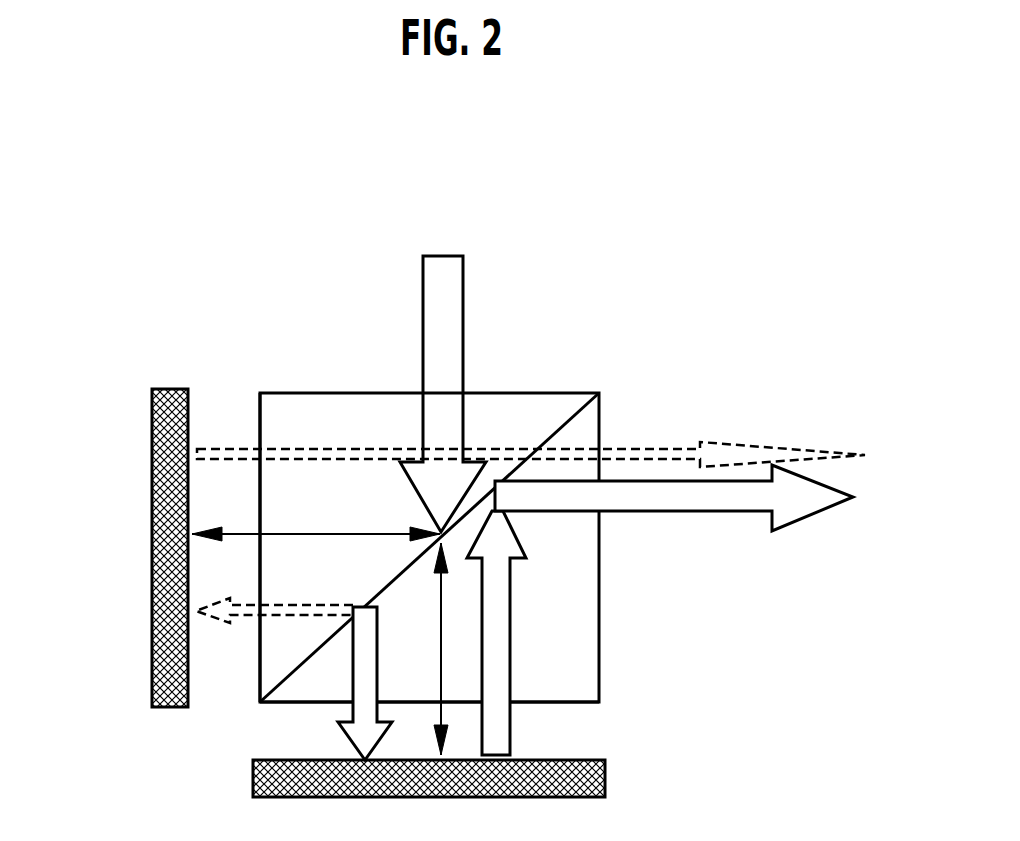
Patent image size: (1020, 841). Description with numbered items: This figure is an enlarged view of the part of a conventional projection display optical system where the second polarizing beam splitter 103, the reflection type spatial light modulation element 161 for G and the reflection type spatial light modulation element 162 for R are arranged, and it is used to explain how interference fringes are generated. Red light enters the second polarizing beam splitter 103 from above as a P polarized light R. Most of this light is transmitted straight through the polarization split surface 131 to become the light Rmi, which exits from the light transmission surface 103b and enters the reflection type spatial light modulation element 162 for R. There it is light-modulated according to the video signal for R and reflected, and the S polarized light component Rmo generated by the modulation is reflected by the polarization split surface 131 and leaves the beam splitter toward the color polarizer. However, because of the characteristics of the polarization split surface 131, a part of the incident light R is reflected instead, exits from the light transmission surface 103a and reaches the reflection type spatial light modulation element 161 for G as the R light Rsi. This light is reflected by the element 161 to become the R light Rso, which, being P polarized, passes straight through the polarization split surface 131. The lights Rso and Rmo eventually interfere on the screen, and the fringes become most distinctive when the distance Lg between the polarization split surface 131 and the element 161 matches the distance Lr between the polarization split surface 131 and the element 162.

The second polarizing beam splitter 103 is at (575, 687).
The light transmission surface 103a is at (258, 405).
The light transmission surface 103b is at (540, 703).
The polarization split surface 131 is at (566, 422).
The reflection type spatial light modulation element for G 161 is at (148, 588).
The reflection type spatial light modulation element for R 162 is at (605, 775).
The R light R is at (450, 288).
The R light Rso is at (660, 450).
The S polarized light component Rmo is at (503, 589).
The R light Rmi is at (358, 735).
The R light Rsi is at (245, 623).
The distance Lg is at (242, 533).
The distance Lr is at (441, 648).